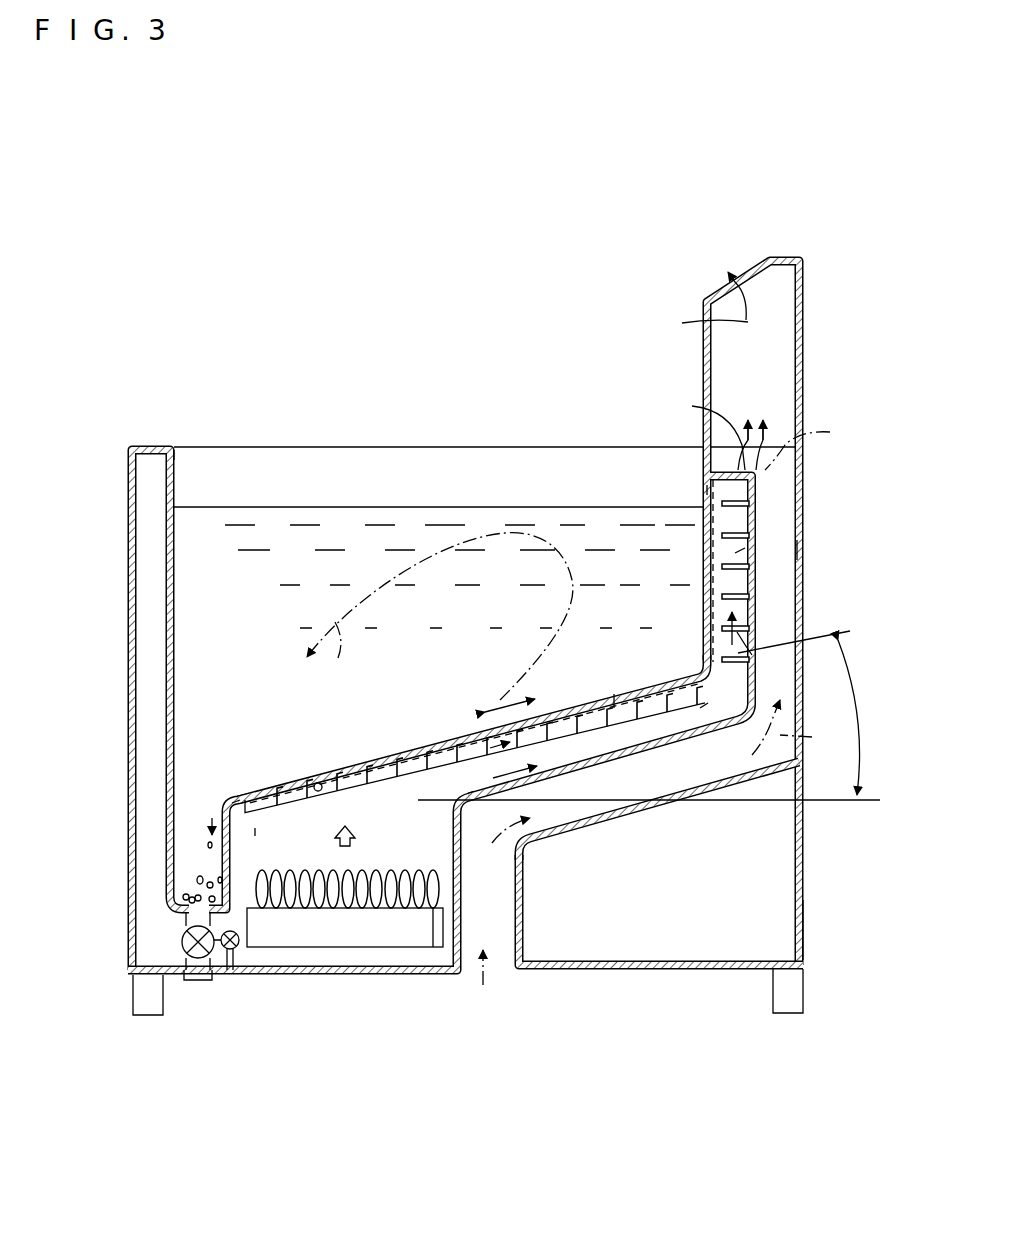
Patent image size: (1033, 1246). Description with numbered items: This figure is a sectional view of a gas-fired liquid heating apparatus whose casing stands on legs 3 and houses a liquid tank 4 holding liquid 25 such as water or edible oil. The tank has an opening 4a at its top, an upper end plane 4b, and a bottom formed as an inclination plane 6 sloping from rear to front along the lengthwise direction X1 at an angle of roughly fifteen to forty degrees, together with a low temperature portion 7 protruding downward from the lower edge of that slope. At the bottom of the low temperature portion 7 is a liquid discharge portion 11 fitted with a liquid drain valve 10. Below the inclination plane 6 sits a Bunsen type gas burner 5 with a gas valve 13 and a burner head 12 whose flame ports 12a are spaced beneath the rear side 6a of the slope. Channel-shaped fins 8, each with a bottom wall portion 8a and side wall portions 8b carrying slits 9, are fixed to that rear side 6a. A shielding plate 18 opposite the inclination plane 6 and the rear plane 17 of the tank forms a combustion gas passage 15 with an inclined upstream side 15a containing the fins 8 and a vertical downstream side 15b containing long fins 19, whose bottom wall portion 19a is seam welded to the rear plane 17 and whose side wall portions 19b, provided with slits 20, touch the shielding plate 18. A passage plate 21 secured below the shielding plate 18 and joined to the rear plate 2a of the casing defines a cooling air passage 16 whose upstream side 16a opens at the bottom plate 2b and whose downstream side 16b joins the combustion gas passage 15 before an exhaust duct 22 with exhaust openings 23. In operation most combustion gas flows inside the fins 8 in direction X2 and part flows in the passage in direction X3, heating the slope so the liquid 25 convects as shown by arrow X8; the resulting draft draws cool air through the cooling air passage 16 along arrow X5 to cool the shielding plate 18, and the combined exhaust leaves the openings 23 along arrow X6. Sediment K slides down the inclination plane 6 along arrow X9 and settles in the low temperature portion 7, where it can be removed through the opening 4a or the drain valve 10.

The rear plate 2a is at (806, 938).
The bottom plate 2b is at (708, 970).
The legs 3 is at (133, 1000).
The liquid tank 4 is at (162, 556).
The opening 4a is at (176, 460).
The upper end plane 4b is at (772, 442).
The gas burner 5 is at (297, 952).
The inclination plane 6 is at (398, 758).
The rear side of inclination plane 6a is at (313, 782).
The low temperature portion 7 is at (190, 858).
The fins 8 is at (585, 722).
The bottom wall portion 8a is at (624, 706).
The side wall portions 8b is at (258, 807).
The slits 9 is at (470, 795).
The liquid drain valve 10 is at (182, 944).
The liquid discharge portion 11 is at (178, 896).
The burner head 12 is at (363, 935).
The flame ports 12a is at (432, 905).
The gas valve 13 is at (230, 955).
The combustion gas passage 15 is at (690, 733).
The upstream side of combustion gas passage 15a is at (475, 830).
The downstream side of combustion gas passage 15b is at (756, 518).
The cooling air passage 16 is at (806, 828).
The upstream side of cooling air passage 16a is at (503, 880).
The downstream side of cooling air passage 16b is at (799, 551).
The rear plane 17 is at (742, 602).
The shielding plate 18 is at (603, 770).
The long fins 19 is at (742, 497).
The bottom wall portion 19a is at (705, 487).
The side wall portions 19b is at (735, 553).
The slits 20 is at (755, 658).
The passage plate 21 is at (717, 820).
The exhaust duct 22 is at (803, 320).
The exhaust openings 23 is at (748, 333).
The liquid 25 is at (285, 507).
The sediment K is at (236, 794).
The lengthwise direction X1 is at (505, 712).
The combustion gas flow direction in fins X2 is at (447, 782).
The combustion gas flow direction in passage X3 is at (618, 617).
The cooling air flow direction X5 is at (548, 860).
The exhaust discharge direction X6 is at (697, 323).
The convection direction X8 is at (440, 617).
The sediment drop direction X9 is at (205, 805).